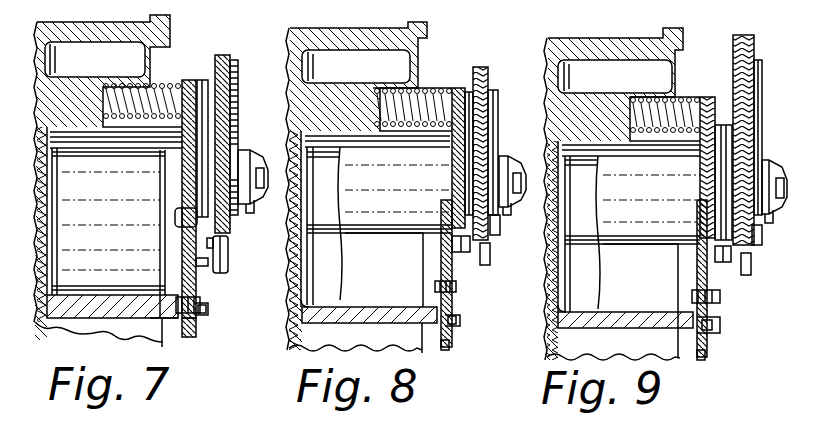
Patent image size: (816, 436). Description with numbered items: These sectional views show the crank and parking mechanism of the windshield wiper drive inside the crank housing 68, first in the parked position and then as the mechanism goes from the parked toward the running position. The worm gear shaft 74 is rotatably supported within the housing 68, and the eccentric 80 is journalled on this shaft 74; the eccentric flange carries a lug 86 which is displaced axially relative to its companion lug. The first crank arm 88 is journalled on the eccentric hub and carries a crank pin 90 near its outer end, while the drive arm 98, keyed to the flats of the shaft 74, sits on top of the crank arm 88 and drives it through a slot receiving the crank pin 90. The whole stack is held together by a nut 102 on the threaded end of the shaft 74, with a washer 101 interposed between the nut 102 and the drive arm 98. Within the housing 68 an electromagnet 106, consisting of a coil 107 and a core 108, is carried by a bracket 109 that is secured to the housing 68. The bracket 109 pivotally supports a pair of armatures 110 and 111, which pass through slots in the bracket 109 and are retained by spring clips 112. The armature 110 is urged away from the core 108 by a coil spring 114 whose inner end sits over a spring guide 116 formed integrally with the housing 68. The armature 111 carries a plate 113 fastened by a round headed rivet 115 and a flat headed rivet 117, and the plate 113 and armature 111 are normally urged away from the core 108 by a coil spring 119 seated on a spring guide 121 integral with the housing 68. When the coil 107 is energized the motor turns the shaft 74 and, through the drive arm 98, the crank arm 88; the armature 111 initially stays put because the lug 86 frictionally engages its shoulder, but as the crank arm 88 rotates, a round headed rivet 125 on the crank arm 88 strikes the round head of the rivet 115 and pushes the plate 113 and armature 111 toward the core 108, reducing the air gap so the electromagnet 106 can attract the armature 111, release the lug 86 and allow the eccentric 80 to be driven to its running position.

In FIG. 7, the crank housing 68 is at (168, 20).
In FIG. 8, the crank housing 68 is at (292, 38).
In FIG. 9, the crank housing 68 is at (548, 50).
In FIG. 7, the worm gear shaft 74 is at (246, 206).
In FIG. 8, the worm gear shaft 74 is at (511, 215).
In FIG. 9, the worm gear shaft 74 is at (771, 225).
In FIG. 9, the eccentric 80 is at (723, 125).
In FIG. 7, the lug 86 is at (197, 180).
In FIG. 8, the lug 86 is at (452, 198).
In FIG. 9, the lug 86 is at (718, 192).
In FIG. 7, the first crank arm 88 is at (222, 55).
In FIG. 8, the first crank arm 88 is at (483, 67).
In FIG. 9, the first crank arm 88 is at (748, 46).
In FIG. 7, the crank pin 90 is at (240, 108).
In FIG. 7, the drive arm 98 is at (229, 252).
In FIG. 8, the drive arm 98 is at (493, 95).
In FIG. 9, the drive arm 98 is at (759, 118).
In FIG. 8, the washer 101 is at (500, 237).
In FIG. 9, the washer 101 is at (754, 247).
In FIG. 7, the nut 102 is at (250, 165).
In FIG. 8, the nut 102 is at (511, 163).
In FIG. 9, the nut 102 is at (774, 168).
In FIG. 7, the electromagnet 106 is at (105, 297).
In FIG. 8, the electromagnet 106 is at (355, 318).
In FIG. 9, the electromagnet 106 is at (597, 322).
In FIG. 7, the coil 107 is at (50, 308).
In FIG. 8, the coil 107 is at (335, 264).
In FIG. 9, the coil 107 is at (590, 265).
In FIG. 7, the core 108 is at (175, 218).
In FIG. 7, the bracket 109 is at (155, 308).
In FIG. 8, the bracket 109 is at (300, 293).
In FIG. 9, the bracket 109 is at (565, 310).
In FIG. 7, the armature 110 is at (190, 338).
In FIG. 8, the armature 111 is at (445, 350).
In FIG. 9, the armature 111 is at (703, 360).
In FIG. 7, the spring clips 112 is at (204, 314).
In FIG. 8, the spring clips 112 is at (455, 322).
In FIG. 9, the spring clips 112 is at (713, 332).
In FIG. 7, the plate 113 is at (198, 78).
In FIG. 8, the plate 113 is at (458, 309).
In FIG. 9, the plate 113 is at (718, 315).
In FIG. 7, the coil spring 114 is at (124, 80).
In FIG. 8, the rivet 115 is at (455, 225).
In FIG. 9, the rivet 115 is at (700, 232).
In FIG. 7, the spring guide 116 is at (82, 76).
In FIG. 7, the rivet 117 is at (200, 294).
In FIG. 8, the rivet 117 is at (440, 291).
In FIG. 9, the rivet 117 is at (692, 296).
In FIG. 7, the coil spring 119 is at (207, 243).
In FIG. 8, the coil spring 119 is at (388, 92).
In FIG. 9, the coil spring 119 is at (648, 97).
In FIG. 8, the spring guide 121 is at (342, 88).
In FIG. 9, the spring guide 121 is at (605, 92).
In FIG. 7, the round headed rivet 125 is at (196, 262).
In FIG. 8, the round headed rivet 125 is at (490, 265).
In FIG. 9, the round headed rivet 125 is at (746, 275).